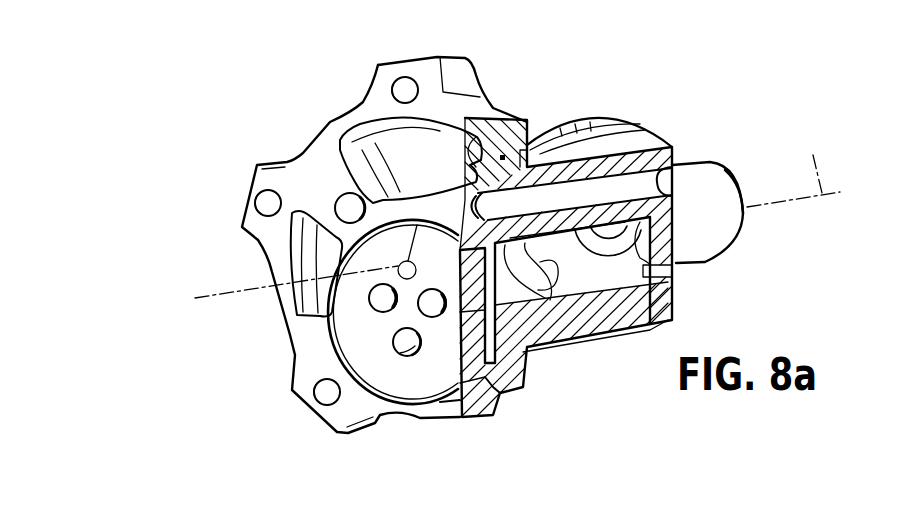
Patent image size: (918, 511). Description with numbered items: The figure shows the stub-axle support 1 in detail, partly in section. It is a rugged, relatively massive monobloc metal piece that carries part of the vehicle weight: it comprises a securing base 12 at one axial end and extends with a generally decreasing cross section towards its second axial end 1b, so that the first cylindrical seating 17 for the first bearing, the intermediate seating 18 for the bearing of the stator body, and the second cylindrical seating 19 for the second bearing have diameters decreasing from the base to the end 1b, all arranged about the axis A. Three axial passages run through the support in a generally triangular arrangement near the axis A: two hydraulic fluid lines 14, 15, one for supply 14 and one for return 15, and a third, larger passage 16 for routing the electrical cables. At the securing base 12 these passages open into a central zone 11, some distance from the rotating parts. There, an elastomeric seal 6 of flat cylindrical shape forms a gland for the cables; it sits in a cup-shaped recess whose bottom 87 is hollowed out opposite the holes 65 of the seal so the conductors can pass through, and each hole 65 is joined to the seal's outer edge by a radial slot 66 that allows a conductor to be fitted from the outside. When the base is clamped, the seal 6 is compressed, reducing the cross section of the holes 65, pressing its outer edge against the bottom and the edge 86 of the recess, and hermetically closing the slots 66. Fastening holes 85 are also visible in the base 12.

The stub-axle support 1 is at (739, 150).
The second axial end 1b is at (739, 184).
The seal 6 is at (418, 382).
The central zone 11 is at (327, 248).
The securing base 12 is at (323, 113).
The hydraulic fluid line 14 is at (347, 203).
The hydraulic fluid line 15 is at (590, 190).
The third passage 16 is at (512, 283).
The first cylindrical seating 17 is at (534, 152).
The intermediate seating 18 is at (622, 145).
The second cylindrical seating 19 is at (683, 177).
The hole 65 is at (402, 338).
The radial slot 66 is at (397, 354).
The fastening hole 85 is at (402, 93).
The edge of the recess 86 is at (445, 402).
The bottom of the receiving recess 87 is at (496, 386).
The axis A is at (793, 168).